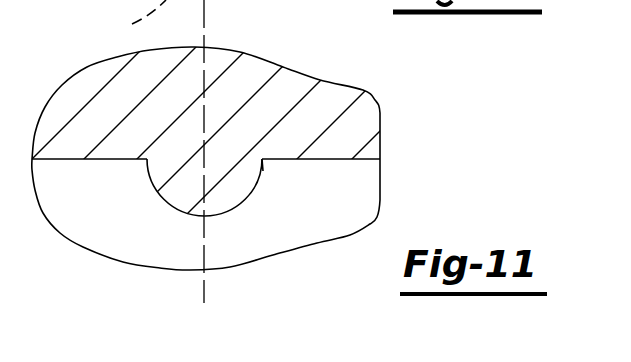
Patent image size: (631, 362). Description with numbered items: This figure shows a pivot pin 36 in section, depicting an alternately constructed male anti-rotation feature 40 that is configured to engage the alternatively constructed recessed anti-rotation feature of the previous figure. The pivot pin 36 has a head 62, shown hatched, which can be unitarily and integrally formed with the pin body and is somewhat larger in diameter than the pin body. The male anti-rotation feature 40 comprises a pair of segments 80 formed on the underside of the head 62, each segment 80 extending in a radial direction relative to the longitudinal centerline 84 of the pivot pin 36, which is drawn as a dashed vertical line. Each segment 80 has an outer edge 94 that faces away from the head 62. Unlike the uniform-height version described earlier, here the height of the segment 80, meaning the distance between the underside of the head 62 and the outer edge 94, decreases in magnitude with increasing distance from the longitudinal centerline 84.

The pivot pin 36 is at (315, 215).
The male anti-rotation feature 40 is at (138, 183).
The head 62 is at (310, 107).
The segment 80 is at (233, 182).
The longitudinal centerline 84 is at (132, 24).
The outer edge 94 is at (157, 197).